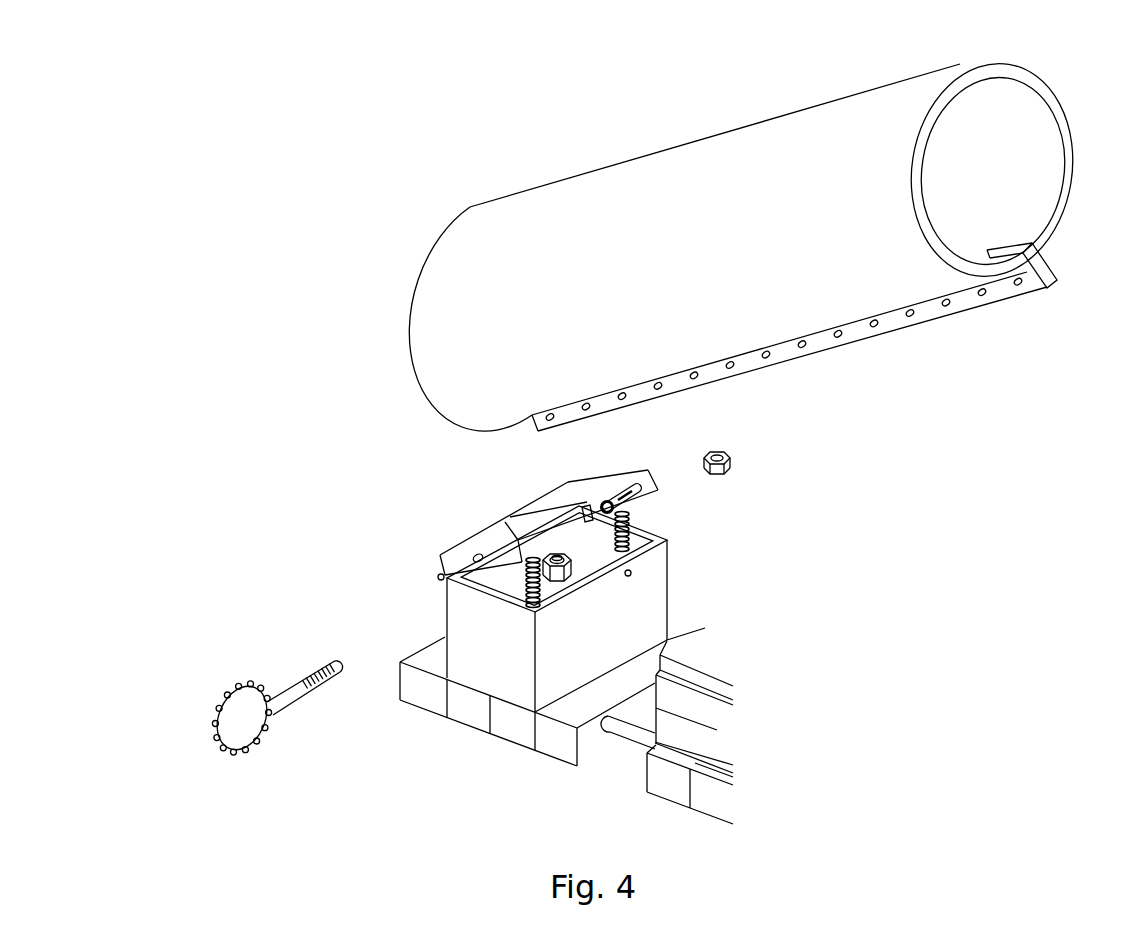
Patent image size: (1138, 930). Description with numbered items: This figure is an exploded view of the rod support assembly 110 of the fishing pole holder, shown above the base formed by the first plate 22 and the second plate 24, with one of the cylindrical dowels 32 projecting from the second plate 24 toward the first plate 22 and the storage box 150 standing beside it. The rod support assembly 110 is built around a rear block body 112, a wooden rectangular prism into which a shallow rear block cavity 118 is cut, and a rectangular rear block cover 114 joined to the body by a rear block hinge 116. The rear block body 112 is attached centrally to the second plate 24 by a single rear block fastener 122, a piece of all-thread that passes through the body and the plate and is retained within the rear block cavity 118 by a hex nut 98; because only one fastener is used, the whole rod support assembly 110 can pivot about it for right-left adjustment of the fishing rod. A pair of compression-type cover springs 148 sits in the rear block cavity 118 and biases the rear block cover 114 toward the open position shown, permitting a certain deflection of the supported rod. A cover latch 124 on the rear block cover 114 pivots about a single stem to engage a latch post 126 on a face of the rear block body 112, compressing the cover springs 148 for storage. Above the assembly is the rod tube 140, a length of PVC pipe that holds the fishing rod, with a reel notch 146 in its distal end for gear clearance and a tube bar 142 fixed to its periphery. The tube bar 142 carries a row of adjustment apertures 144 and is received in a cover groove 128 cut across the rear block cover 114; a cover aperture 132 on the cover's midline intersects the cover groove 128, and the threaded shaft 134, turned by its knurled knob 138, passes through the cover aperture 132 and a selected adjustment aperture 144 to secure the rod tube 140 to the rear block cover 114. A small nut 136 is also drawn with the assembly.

The rod tube 140 is at (700, 152).
The tube bar 142 is at (633, 398).
The adjustment apertures 144 is at (659, 388).
The reel notch 146 is at (1044, 292).
The rod support assembly 110 is at (404, 541).
The rear block body 112 is at (658, 622).
The rear block cover 114 is at (652, 475).
The rear block hinge 116 is at (438, 577).
The rear block cavity 118 is at (602, 560).
The rear block fastener 122 is at (570, 571).
The cover latch 124 is at (640, 491).
The latch post 126 is at (633, 575).
The cover groove 128 is at (587, 503).
The cover aperture 132 is at (475, 553).
The threaded shaft 134 is at (296, 690).
The nut 136 is at (732, 462).
The knob 138 is at (258, 752).
The cover springs 148 is at (633, 513).
The storage box 150 is at (737, 654).
The hex nut 98 is at (560, 571).
The second plate 24 is at (398, 683).
The first plate 22 is at (737, 773).
The cylindrical dowels 32 is at (630, 742).